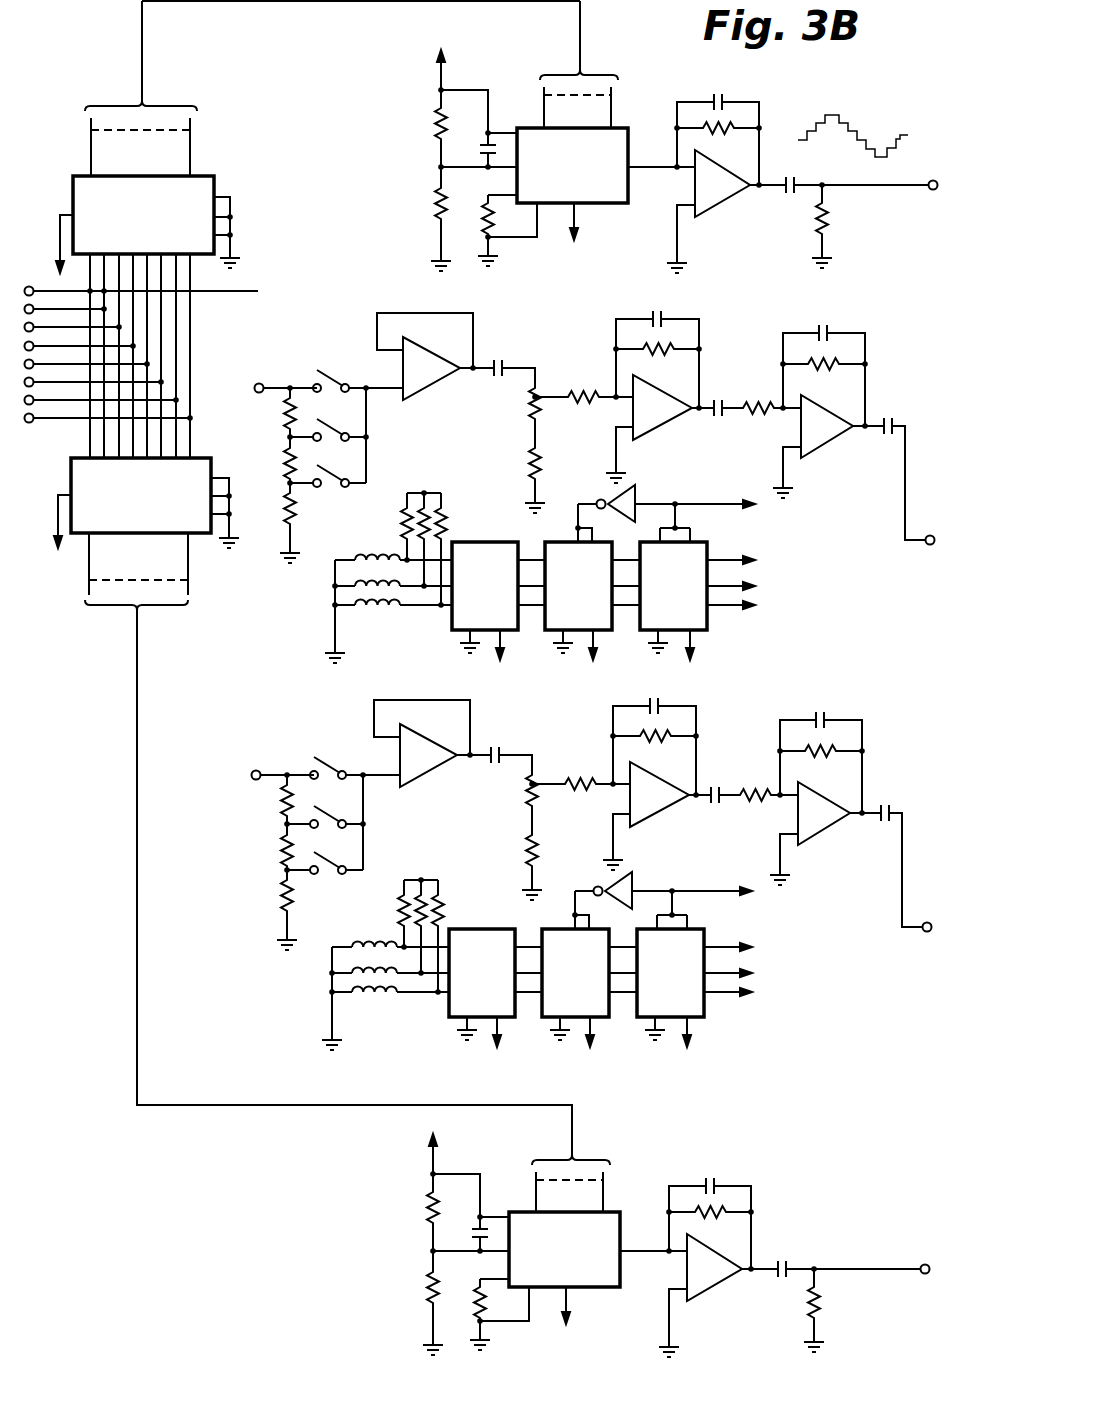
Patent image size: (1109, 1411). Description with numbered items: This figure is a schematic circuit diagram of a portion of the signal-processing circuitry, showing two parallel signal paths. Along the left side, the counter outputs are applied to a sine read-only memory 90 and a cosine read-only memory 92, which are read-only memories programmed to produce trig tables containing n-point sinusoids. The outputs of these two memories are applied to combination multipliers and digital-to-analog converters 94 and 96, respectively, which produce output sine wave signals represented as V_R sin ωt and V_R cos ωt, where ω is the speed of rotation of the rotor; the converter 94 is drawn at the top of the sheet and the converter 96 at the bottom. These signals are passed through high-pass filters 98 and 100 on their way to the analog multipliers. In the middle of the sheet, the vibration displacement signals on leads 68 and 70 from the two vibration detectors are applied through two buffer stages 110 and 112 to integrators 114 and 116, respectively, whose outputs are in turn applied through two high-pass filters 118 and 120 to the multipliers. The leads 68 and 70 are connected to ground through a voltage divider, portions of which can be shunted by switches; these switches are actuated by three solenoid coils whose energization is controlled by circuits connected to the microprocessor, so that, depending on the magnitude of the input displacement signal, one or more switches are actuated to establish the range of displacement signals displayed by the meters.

The lead 68 is at (274, 385).
The lead 70 is at (270, 760).
The sine read-only memory 90 is at (148, 187).
The cosine read-only memory 92 is at (146, 534).
The combination multiplier and digital-to-analog converter 94 is at (572, 165).
The combination multiplier and digital-to-analog converter 96 is at (564, 1249).
The high-pass filter 98 is at (723, 204).
The high-pass filter 100 is at (719, 1267).
The buffer stage 110 is at (447, 356).
The buffer stage 112 is at (443, 743).
The integrator 114 is at (672, 392).
The integrator 116 is at (678, 784).
The high-pass filter 118 is at (838, 404).
The high-pass filter 120 is at (846, 798).